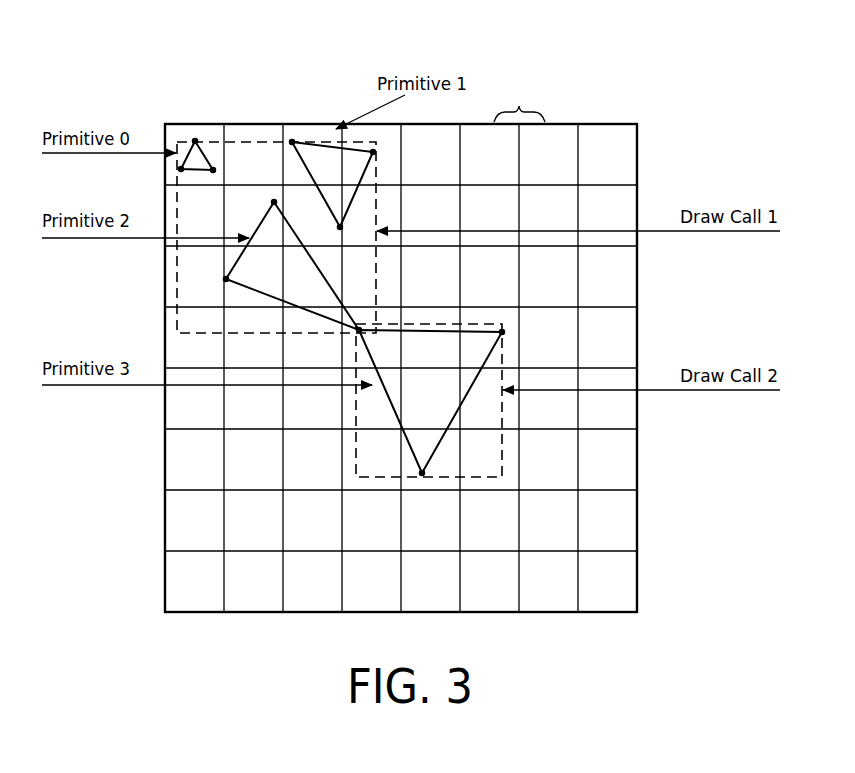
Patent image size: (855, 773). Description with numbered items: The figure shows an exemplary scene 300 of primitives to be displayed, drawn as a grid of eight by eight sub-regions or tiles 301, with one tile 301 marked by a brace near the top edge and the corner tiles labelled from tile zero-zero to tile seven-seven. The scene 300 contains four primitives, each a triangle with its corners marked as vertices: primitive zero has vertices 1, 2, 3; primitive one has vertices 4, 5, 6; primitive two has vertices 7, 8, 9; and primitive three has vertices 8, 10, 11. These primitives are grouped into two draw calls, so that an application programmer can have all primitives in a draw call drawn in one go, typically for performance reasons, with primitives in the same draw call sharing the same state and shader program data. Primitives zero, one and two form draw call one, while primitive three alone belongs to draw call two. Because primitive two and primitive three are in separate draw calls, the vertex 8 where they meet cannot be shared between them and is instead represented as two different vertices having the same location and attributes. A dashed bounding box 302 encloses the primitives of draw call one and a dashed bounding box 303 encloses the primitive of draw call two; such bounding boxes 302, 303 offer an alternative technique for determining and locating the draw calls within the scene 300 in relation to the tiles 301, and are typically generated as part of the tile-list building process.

The scene 300 is at (256, 77).
The tile 301 is at (519, 102).
The bounding box 302 is at (176, 276).
The bounding box 303 is at (503, 466).
The vertex 1 is at (201, 144).
The vertex 2 is at (178, 181).
The vertex 3 is at (218, 179).
The vertex 4 is at (380, 154).
The vertex 5 is at (285, 132).
The vertex 6 is at (347, 233).
The vertex 7 is at (271, 191).
The vertex 8 is at (363, 319).
The vertex 9 is at (216, 281).
The vertex 10 is at (510, 320).
The vertex 11 is at (411, 485).